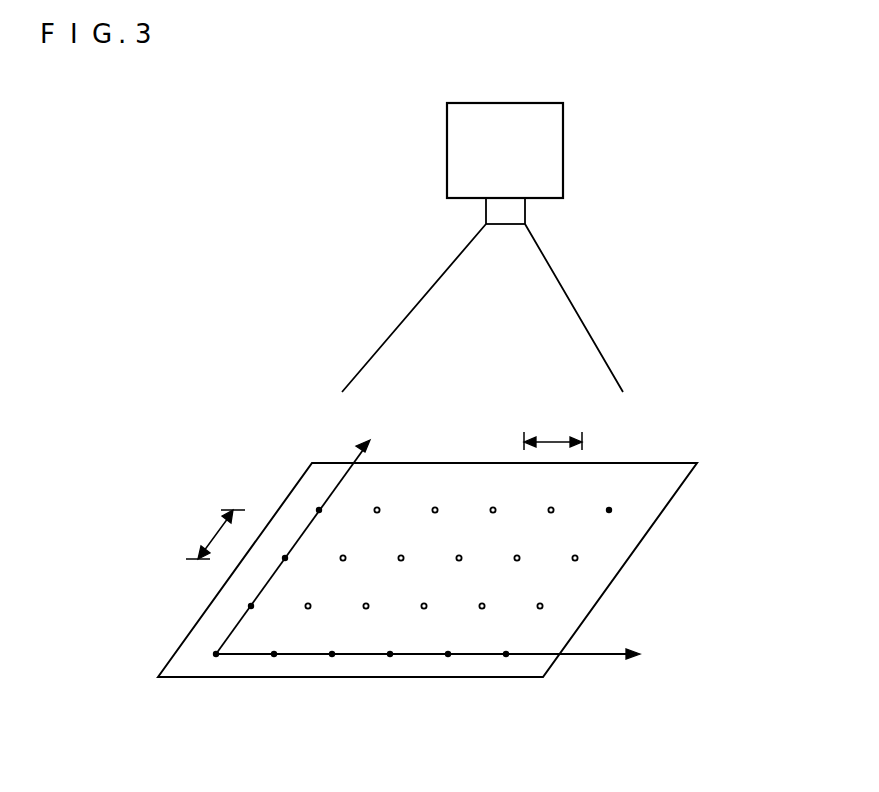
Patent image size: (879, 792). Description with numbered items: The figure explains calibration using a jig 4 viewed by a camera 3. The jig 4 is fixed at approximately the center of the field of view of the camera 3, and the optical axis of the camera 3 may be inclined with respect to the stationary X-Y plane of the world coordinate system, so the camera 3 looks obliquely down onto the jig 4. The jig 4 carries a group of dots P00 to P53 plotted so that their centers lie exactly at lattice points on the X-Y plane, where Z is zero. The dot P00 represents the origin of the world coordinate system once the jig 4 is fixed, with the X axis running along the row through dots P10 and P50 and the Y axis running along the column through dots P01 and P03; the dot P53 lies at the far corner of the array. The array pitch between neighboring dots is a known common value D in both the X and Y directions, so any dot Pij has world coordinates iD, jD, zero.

The camera 3 is at (543, 155).
The jig 4 is at (600, 602).
The dot representing an origin P00 is at (216, 654).
The dot P10 is at (274, 654).
The dot P50 is at (506, 654).
The dot P01 is at (251, 606).
The dot P03 is at (319, 510).
The dot P53 is at (609, 510).